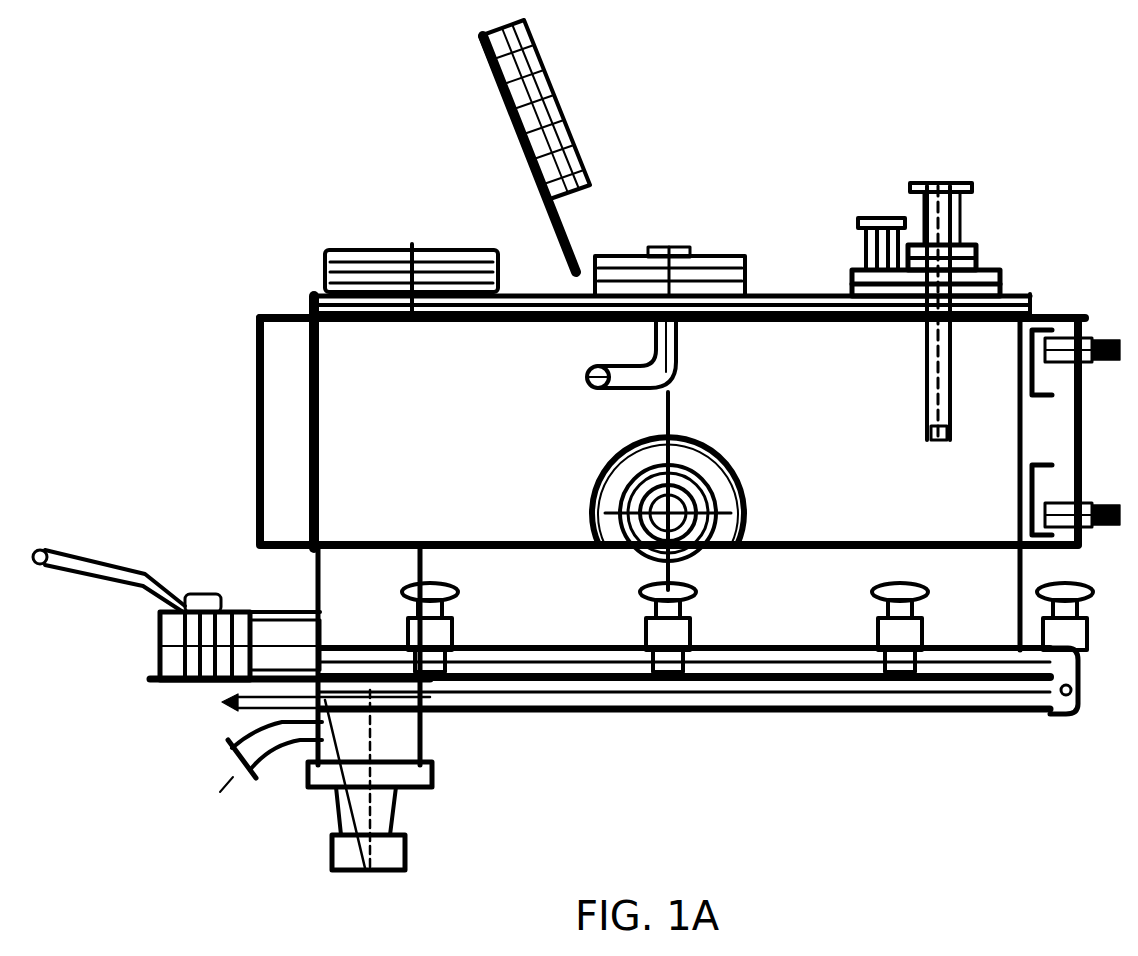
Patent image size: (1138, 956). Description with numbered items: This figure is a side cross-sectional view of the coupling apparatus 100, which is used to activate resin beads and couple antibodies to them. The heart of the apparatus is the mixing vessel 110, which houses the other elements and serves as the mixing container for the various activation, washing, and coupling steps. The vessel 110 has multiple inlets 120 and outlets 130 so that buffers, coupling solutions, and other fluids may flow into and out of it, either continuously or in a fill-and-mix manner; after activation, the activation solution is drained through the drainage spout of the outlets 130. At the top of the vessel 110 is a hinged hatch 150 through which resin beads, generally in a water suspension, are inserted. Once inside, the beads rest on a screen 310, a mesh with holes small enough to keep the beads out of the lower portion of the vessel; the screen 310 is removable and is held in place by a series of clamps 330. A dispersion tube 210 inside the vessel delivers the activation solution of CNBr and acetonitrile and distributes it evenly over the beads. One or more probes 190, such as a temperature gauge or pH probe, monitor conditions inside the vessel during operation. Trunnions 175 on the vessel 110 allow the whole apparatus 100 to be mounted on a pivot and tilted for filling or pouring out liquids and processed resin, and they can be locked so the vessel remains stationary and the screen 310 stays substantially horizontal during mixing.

The coupling apparatus 100 is at (795, 55).
The mixing vessel 110 is at (298, 310).
The inlets 120 is at (885, 218).
The outlets 130 is at (233, 778).
The hinged hatch 150 is at (455, 250).
The trunnions 175 is at (637, 550).
The probes 190 is at (955, 400).
The dispersion tube 210 is at (677, 378).
The screen 310 is at (838, 700).
The clamps 330 is at (1062, 718).